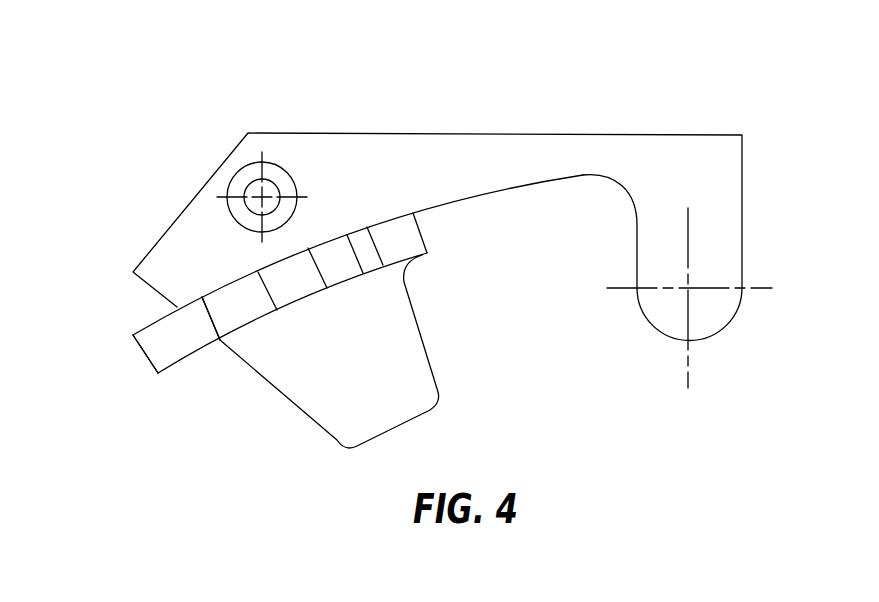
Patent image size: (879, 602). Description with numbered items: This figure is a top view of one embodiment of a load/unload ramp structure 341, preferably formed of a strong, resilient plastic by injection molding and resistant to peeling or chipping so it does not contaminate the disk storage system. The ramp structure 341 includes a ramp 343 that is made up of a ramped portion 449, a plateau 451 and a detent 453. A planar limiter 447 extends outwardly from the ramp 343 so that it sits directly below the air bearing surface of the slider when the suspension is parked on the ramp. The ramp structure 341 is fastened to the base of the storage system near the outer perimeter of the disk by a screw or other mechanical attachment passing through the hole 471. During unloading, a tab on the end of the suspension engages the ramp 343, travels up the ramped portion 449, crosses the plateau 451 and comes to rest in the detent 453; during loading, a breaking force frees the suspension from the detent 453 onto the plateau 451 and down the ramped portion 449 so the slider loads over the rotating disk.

The load/unload ramp structure 341 is at (705, 83).
The ramp 343 is at (130, 372).
The hole 471 is at (247, 182).
The ramped portion 449 is at (183, 352).
The plateau 451 is at (247, 317).
The detent 453 is at (388, 277).
The planar limiter 447 is at (427, 370).